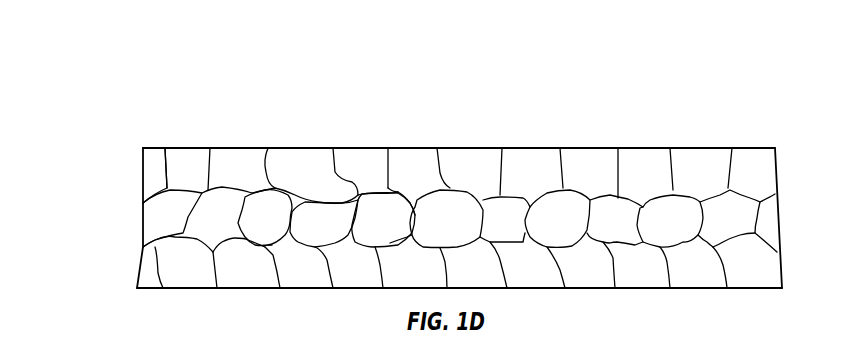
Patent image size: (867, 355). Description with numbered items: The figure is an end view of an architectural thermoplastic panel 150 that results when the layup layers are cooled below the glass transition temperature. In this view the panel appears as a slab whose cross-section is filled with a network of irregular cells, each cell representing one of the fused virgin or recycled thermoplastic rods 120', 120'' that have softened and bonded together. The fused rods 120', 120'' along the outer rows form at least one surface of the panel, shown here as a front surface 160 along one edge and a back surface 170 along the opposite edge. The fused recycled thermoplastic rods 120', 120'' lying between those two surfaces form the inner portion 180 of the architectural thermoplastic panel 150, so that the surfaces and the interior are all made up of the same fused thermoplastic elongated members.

The architectural thermoplastic panel 150 is at (722, 68).
The front surface 160 is at (547, 292).
The back surface 170 is at (390, 147).
The inner portion 180 is at (168, 222).
The fused thermoplastic rod 120' is at (157, 135).
The fused thermoplastic rod 120'' is at (155, 141).